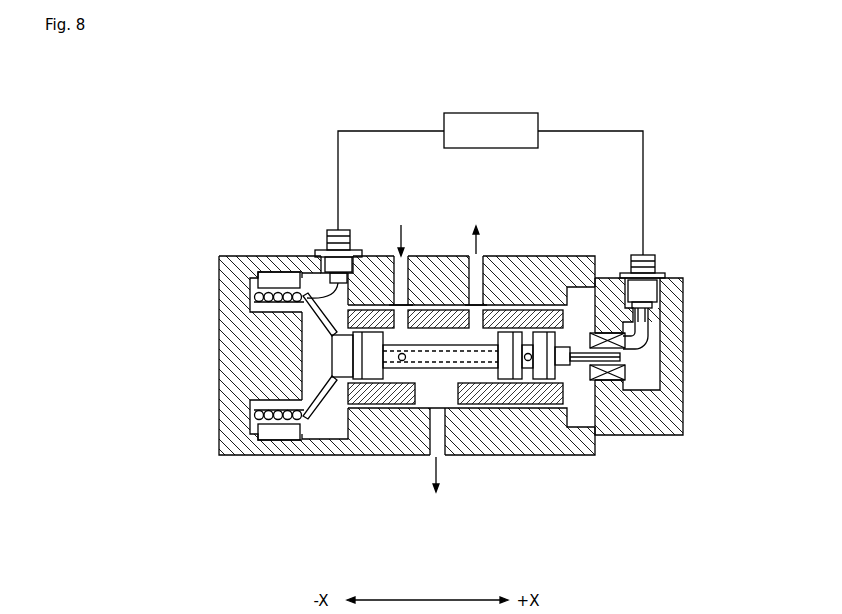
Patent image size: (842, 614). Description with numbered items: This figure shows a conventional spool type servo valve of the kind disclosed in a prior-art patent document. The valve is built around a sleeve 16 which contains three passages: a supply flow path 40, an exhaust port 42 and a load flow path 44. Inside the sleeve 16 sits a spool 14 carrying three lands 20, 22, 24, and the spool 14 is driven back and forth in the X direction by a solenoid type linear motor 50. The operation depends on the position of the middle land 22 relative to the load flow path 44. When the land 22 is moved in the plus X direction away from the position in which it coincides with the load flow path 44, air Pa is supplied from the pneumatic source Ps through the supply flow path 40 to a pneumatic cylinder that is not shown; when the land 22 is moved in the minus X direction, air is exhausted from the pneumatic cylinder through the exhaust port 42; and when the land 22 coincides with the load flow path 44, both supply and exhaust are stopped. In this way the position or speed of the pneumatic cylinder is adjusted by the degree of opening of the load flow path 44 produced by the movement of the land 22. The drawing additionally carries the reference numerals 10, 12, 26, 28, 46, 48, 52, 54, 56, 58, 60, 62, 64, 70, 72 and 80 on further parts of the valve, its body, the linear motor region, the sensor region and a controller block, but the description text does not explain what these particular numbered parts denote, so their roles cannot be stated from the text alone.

The fluid pressure control device 10 is at (376, 347).
The body block 12 is at (620, 469).
The spool 14 is at (476, 459).
The sleeve 16 is at (478, 302).
The land 20 is at (369, 380).
The land 22 is at (419, 368).
The land 24 is at (572, 440).
The third piston land 26 is at (477, 363).
The neck portion 28 is at (490, 357).
The supply flow path 40 is at (368, 312).
The exhaust port 42 is at (497, 287).
The load flow path 44 is at (456, 406).
The supply passage 46 is at (425, 285).
The output passage 48 is at (452, 280).
The solenoid type linear motor 50 is at (276, 372).
The electromagnet coil 52 is at (266, 442).
The link arm 54 is at (322, 400).
The rolling balls 56 is at (303, 420).
The guide track 58 is at (312, 290).
The detection unit 60 is at (684, 360).
The first sensor element 62 is at (640, 348).
The second sensor element 64 is at (627, 372).
The first position sensor 70 is at (323, 242).
The second position sensor 72 is at (654, 262).
The controller 80 is at (538, 118).